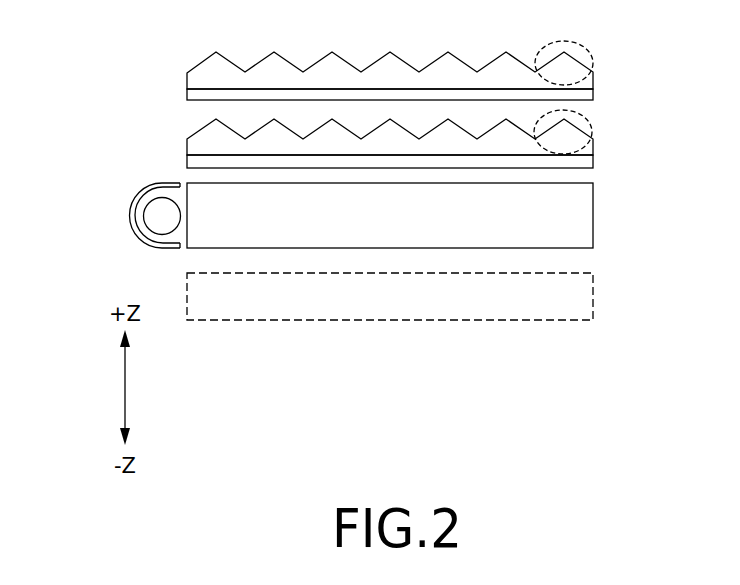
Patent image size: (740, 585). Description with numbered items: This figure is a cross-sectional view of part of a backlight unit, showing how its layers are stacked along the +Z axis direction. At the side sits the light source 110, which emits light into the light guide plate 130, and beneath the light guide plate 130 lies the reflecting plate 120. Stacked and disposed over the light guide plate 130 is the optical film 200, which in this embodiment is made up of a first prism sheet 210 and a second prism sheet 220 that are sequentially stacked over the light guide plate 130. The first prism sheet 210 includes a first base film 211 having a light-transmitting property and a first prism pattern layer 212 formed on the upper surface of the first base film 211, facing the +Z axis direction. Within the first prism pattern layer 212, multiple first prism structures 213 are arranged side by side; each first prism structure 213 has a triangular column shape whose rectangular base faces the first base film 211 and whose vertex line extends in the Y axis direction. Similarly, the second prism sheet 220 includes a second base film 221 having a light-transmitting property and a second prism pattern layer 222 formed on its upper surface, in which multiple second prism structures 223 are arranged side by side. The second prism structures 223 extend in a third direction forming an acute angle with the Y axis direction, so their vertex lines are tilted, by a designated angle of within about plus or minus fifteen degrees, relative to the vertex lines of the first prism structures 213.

The optical film 200 is at (70, 62).
The second prism sheet 220 is at (383, 72).
The second base film 221 is at (580, 96).
The second prism pattern layer 222 is at (580, 83).
The second prism structure 223 is at (577, 44).
The first prism sheet 210 is at (383, 158).
The first base film 211 is at (582, 162).
The first prism pattern layer 212 is at (582, 150).
The first prism structure 213 is at (583, 115).
The light guide plate 130 is at (572, 214).
The reflecting plate 120 is at (572, 302).
The light source 110 is at (152, 213).